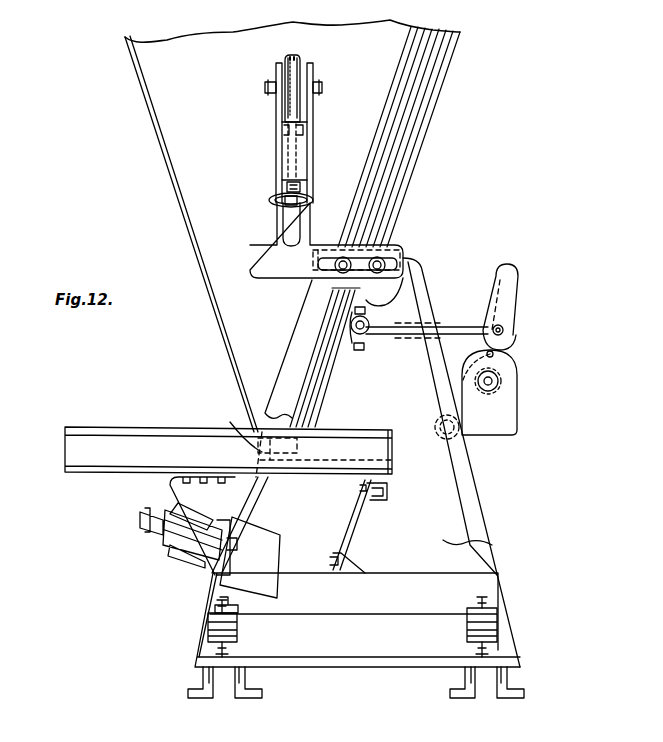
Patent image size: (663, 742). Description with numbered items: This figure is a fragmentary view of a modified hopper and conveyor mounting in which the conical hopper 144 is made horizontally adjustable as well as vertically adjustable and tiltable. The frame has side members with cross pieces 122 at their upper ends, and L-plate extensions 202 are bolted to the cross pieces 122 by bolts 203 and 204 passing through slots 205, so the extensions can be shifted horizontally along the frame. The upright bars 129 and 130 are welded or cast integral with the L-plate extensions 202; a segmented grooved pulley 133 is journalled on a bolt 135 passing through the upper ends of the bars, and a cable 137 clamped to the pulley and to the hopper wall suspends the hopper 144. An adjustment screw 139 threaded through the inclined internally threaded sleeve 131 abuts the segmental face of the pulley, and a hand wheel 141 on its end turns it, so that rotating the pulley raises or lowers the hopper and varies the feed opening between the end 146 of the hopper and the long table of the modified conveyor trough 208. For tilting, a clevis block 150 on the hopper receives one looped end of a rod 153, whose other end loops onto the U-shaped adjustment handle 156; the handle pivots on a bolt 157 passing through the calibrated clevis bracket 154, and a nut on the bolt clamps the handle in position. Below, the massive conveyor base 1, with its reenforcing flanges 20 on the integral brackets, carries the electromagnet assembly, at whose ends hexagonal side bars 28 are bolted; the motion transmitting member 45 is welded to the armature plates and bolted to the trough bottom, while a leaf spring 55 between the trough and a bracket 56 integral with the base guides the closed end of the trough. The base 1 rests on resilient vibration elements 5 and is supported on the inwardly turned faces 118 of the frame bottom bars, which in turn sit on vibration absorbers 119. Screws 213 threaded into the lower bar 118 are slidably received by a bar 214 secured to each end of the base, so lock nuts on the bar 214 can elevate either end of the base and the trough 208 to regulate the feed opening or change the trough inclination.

The base 1 is at (425, 580).
The resilient vibration elements 5 is at (213, 620).
The reenforcing flanges 20 is at (272, 546).
The hexagonal side bar 28 is at (172, 532).
The motion transmitting member 45 is at (168, 496).
The leaf spring 55 is at (350, 536).
The bracket 56 is at (353, 563).
The inwardly turned face 118 is at (343, 666).
The vibration absorbers 119 is at (200, 686).
The cross pieces 122 is at (402, 305).
The upright bar 129 is at (278, 126).
The upright bar 130 is at (313, 126).
The internally threaded sleeve 131 is at (281, 149).
The segmented grooved pulley 133 is at (286, 60).
The bolt 135 is at (266, 91).
The cable 137 is at (298, 58).
The adjustment screw 139 is at (299, 190).
The hand wheel 141 is at (270, 199).
The conical hopper 144 is at (230, 347).
The end of the hopper 146 is at (245, 438).
The clevis block 150 is at (366, 334).
The rod 153 is at (445, 325).
The clevis bracket 154 is at (515, 397).
The adjustment handle 156 is at (506, 292).
The bolt 157 is at (497, 378).
The L-plate extensions 202 is at (255, 245).
The bolt 203 is at (385, 252).
The bolt 204 is at (380, 256).
The slots 205 is at (312, 282).
The conveyor trough 208 is at (76, 449).
The screw 213 is at (238, 630).
The bar 214 is at (210, 639).